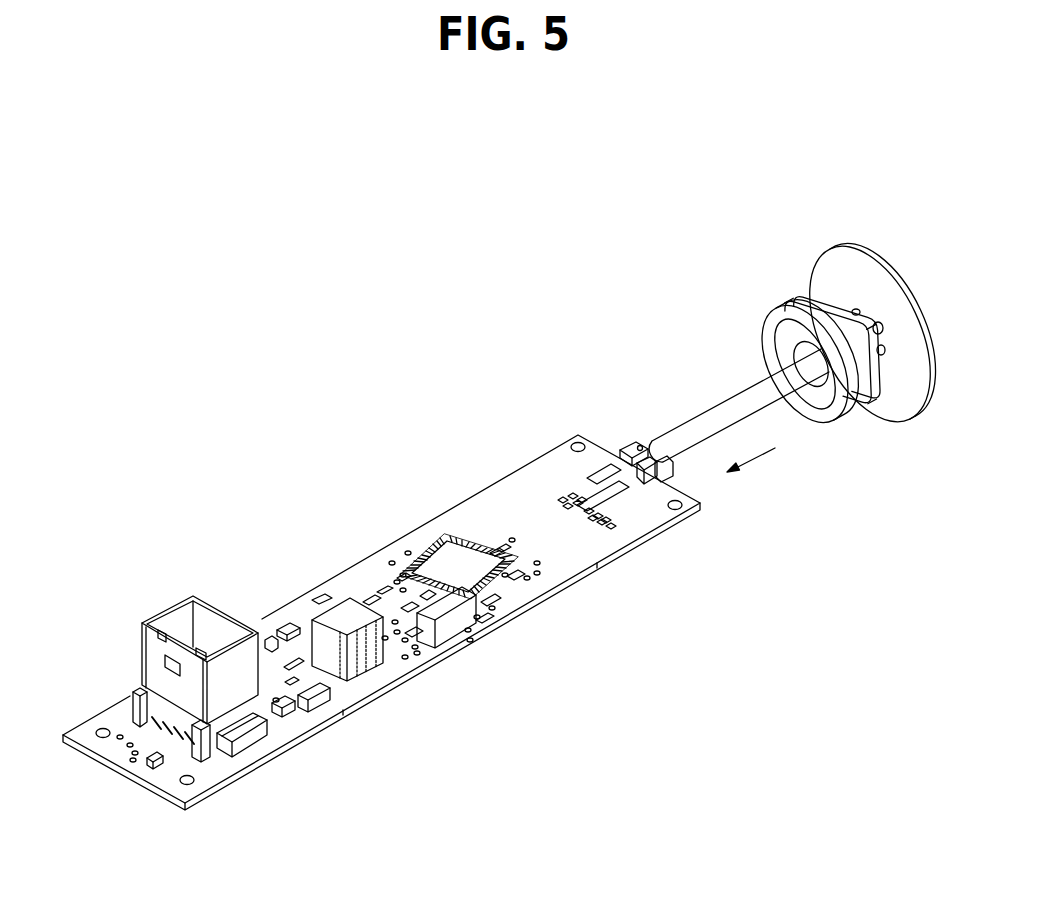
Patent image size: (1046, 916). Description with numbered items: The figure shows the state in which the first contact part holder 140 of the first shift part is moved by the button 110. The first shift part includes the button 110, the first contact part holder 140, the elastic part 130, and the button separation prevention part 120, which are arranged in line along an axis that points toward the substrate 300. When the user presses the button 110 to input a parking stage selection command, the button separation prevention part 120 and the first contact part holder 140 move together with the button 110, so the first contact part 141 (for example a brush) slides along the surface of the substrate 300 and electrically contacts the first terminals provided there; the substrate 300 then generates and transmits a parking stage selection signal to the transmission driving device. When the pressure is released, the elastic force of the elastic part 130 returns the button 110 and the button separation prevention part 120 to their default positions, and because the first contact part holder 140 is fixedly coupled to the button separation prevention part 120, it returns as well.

The button 110 is at (871, 254).
The button separation prevention part 120 is at (800, 293).
The elastic part 130 is at (778, 318).
The first contact part holder 140 is at (732, 395).
The first contact part 141 is at (622, 455).
The substrate 300 is at (345, 571).